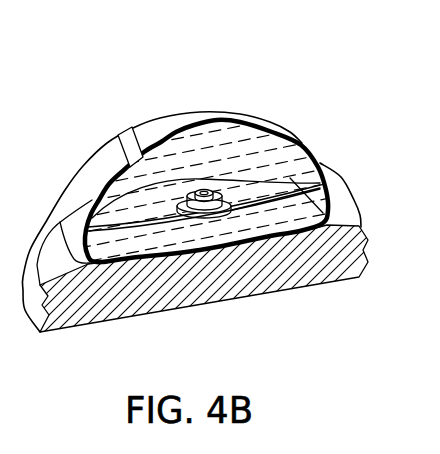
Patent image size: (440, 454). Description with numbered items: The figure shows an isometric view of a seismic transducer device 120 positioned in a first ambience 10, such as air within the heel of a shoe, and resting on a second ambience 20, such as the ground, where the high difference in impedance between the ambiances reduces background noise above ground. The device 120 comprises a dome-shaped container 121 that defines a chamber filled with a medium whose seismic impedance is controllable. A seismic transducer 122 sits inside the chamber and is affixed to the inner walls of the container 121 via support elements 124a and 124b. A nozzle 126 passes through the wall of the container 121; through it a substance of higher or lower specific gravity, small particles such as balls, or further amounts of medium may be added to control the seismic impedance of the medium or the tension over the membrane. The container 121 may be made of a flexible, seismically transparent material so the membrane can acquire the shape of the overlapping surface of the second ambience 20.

The first ambience 10 is at (108, 65).
The second ambience 20 is at (137, 310).
The seismic transducer device 120 is at (184, 188).
The container 121 is at (96, 166).
The seismic transducer 122 is at (203, 214).
The support element 124a is at (303, 183).
The support element 124b is at (93, 226).
The nozzle 126 is at (122, 137).